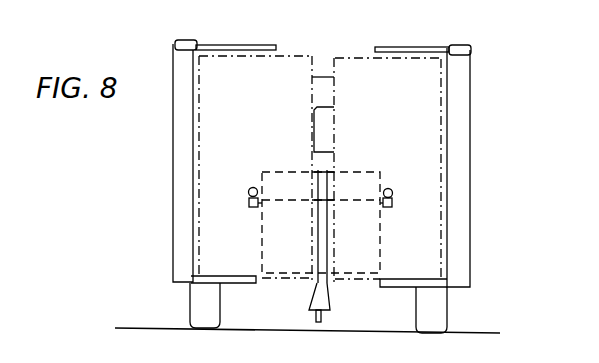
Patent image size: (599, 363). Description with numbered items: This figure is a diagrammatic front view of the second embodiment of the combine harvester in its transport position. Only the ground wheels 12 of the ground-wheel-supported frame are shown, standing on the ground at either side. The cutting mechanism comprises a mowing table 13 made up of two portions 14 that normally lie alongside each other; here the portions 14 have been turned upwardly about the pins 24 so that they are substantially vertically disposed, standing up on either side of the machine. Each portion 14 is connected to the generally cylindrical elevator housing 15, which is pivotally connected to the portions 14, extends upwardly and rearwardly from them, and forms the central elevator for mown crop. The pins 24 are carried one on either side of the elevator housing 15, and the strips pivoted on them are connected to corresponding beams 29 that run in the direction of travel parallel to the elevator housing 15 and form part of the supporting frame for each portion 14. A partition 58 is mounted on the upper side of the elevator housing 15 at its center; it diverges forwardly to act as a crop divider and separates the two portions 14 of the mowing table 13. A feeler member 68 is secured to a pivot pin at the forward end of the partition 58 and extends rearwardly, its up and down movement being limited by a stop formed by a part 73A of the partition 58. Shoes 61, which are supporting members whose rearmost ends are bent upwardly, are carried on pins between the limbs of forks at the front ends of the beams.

The ground wheels 12 is at (190, 314).
The mowing table 13 is at (170, 178).
The portions 14 is at (346, 58).
The elevator housing 15 is at (381, 262).
The pins 24 is at (249, 205).
The beams 29 is at (252, 187).
The partition 58 is at (323, 253).
The shoes 61 is at (190, 41).
The feeler member 68 is at (322, 316).
The part of the partition 73A is at (312, 303).